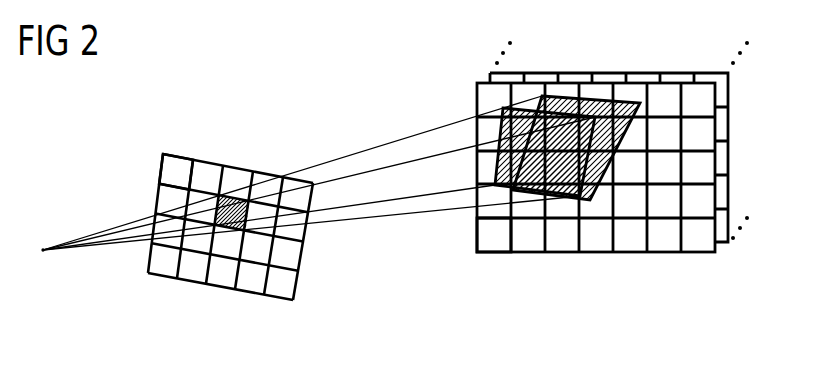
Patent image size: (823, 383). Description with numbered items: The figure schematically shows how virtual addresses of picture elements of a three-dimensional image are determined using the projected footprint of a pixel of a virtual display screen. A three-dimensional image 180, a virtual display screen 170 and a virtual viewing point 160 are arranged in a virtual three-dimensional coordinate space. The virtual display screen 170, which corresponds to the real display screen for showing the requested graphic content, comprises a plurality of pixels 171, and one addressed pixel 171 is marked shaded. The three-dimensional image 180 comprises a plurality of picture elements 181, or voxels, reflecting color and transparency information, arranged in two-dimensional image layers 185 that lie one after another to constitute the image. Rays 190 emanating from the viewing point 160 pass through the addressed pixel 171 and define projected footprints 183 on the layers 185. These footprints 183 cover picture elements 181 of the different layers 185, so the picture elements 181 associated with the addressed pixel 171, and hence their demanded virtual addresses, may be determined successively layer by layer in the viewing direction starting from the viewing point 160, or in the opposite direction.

The virtual viewing point 160 is at (43, 250).
The virtual display screen 170 is at (337, 297).
The pixel 171 is at (167, 172).
The three-dimensional image 180 is at (686, 311).
The picture element 181 is at (495, 250).
The projected footprint 183 is at (496, 176).
The two-dimensional image layer 185 is at (728, 125).
The rays 190 is at (380, 144).